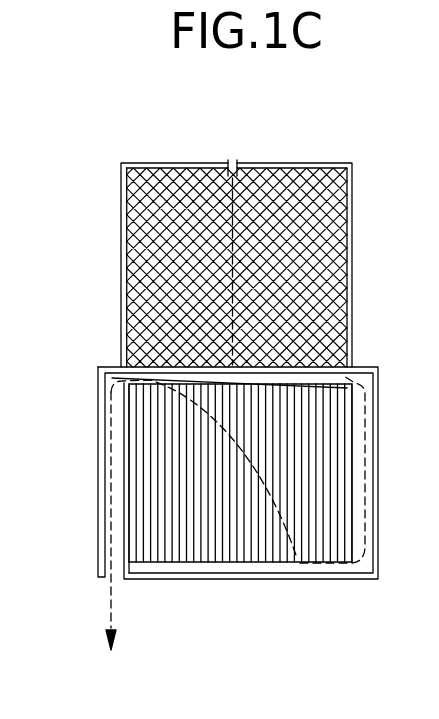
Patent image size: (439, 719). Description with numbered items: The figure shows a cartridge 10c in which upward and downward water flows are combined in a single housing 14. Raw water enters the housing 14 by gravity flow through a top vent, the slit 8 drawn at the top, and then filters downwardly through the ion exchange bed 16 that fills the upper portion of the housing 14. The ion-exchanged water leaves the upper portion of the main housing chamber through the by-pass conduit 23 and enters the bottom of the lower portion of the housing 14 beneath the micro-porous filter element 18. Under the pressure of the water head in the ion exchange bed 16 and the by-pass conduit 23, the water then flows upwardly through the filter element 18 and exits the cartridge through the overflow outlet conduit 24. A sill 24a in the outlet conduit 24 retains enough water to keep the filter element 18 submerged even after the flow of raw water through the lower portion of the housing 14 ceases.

The cartridge 10c is at (136, 155).
The inlet slit 8 is at (231, 160).
The housing 14 is at (334, 162).
The ion exchange bed 16 is at (336, 273).
The overflow outlet conduit 24 is at (110, 378).
The sill 24a is at (124, 393).
The by-pass conduit 23 is at (365, 378).
The micro-porous filter element 18 is at (337, 458).